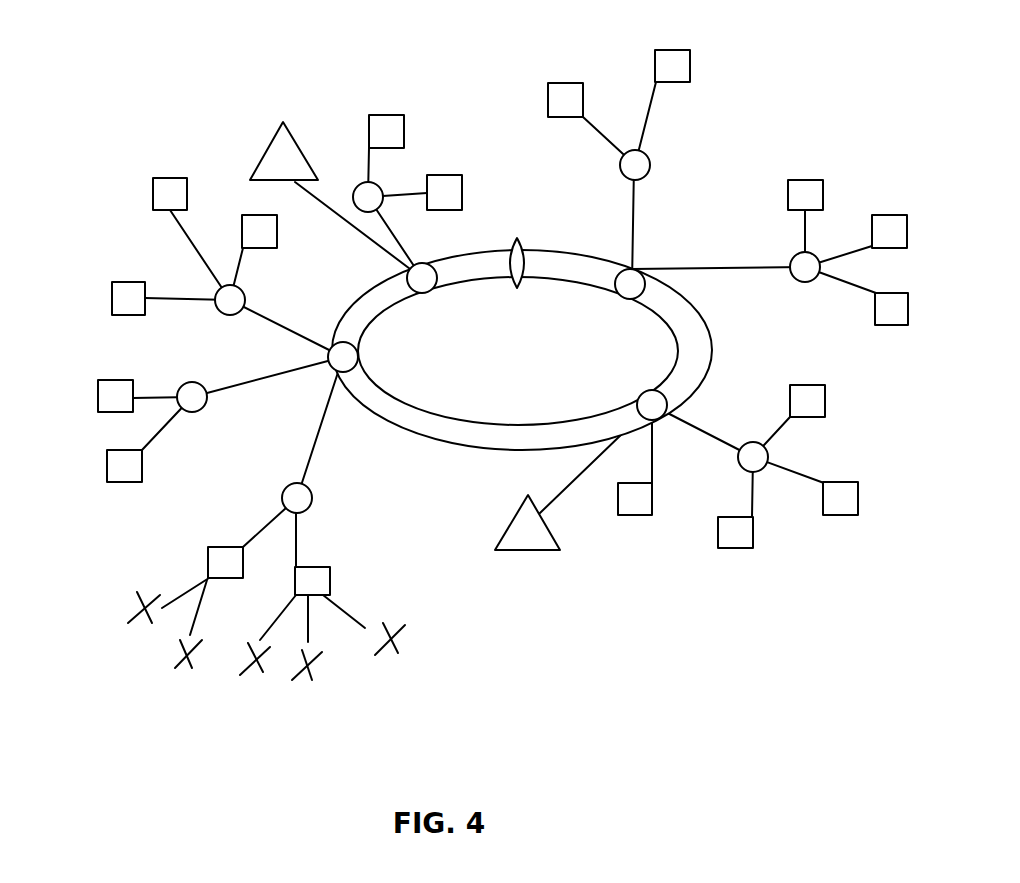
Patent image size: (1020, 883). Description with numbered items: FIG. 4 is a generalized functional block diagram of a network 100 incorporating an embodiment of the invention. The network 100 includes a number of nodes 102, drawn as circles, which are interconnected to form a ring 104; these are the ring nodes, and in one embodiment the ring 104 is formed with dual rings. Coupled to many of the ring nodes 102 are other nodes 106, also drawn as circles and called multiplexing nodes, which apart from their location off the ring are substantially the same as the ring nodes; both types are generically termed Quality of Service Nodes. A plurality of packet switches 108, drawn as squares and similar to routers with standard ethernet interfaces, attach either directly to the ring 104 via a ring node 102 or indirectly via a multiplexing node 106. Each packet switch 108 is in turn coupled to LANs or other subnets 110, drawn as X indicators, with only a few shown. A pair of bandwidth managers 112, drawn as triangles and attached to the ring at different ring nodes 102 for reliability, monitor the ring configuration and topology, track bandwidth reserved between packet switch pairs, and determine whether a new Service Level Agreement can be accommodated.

The network 100 is at (522, 229).
The ring nodes 102 is at (422, 293).
The ring 104 is at (516, 237).
The multiplexing nodes 106 is at (244, 289).
The packet switches 108 is at (155, 207).
The subnets 110 is at (177, 673).
The bandwidth managers 112 is at (292, 140).